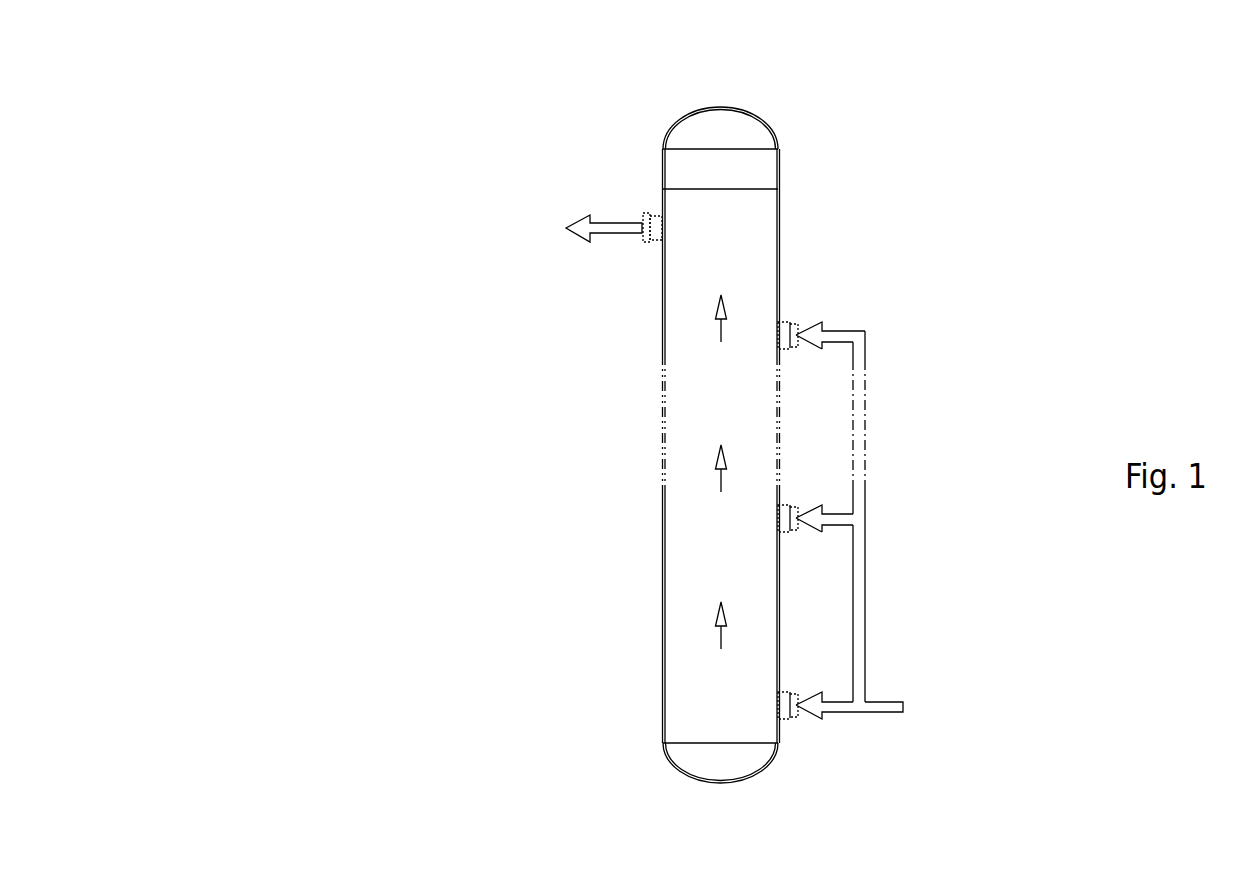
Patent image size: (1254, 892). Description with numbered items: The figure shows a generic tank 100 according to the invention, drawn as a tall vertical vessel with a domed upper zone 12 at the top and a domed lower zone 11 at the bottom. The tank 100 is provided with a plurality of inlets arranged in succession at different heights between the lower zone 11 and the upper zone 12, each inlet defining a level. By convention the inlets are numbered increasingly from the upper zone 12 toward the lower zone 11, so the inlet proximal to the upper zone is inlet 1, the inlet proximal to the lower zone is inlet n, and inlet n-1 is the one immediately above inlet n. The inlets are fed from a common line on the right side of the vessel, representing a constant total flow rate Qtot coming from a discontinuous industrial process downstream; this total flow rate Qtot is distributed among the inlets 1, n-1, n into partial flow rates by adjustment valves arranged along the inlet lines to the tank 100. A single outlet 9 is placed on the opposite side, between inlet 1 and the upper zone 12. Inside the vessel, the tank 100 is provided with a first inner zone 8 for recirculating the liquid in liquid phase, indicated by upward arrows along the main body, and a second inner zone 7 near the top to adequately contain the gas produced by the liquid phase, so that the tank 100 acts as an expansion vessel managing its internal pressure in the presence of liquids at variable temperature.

The tank 100 is at (385, 286).
The upper zone 12 is at (745, 132).
The second inner zone 7 is at (735, 175).
The outlet 9 is at (645, 237).
The first inner zone 8 is at (682, 572).
The inlet 1 is at (790, 325).
The inlet n-1 is at (792, 524).
The inlet n is at (788, 711).
The total flow rate Qtot is at (903, 705).
The lower zone 11 is at (690, 760).